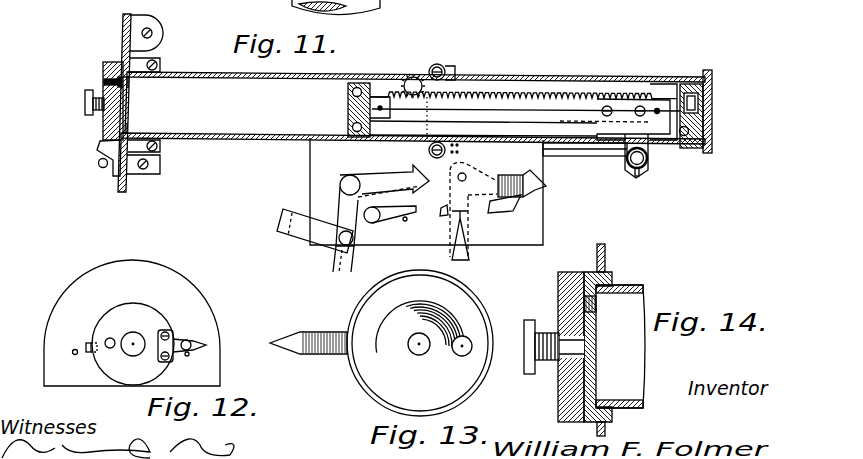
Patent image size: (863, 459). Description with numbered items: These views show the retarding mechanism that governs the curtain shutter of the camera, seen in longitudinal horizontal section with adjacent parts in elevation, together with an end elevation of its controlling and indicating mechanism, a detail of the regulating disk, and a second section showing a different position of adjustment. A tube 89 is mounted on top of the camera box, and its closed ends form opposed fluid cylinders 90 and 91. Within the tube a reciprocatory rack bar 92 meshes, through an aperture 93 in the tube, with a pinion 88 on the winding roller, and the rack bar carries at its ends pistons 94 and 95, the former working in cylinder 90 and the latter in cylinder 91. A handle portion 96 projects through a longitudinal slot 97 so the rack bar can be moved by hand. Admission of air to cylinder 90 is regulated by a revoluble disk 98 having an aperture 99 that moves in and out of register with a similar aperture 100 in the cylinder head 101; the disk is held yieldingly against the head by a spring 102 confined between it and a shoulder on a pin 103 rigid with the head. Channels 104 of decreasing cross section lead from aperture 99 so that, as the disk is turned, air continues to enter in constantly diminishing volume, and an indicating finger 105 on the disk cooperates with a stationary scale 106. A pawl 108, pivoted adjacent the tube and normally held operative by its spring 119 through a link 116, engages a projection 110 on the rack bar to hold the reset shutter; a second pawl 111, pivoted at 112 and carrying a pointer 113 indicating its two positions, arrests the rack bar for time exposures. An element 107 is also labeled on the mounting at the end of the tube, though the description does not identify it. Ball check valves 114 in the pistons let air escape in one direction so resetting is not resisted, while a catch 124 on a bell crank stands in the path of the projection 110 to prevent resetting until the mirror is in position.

In FIG. 11, the pinion 88 is at (408, 78).
In FIG. 11, the tube 89 is at (556, 77).
In FIG. 11, the fluid cylinder 90 is at (196, 105).
In FIG. 11, the fluid cylinder 91 is at (703, 76).
In FIG. 11, the rack bar 92 is at (525, 112).
In FIG. 11, the aperture 93 is at (435, 64).
In FIG. 11, the piston 94 is at (348, 101).
In FIG. 11, the piston 95 is at (696, 103).
In FIG. 11, the handle portion 96 is at (648, 163).
In FIG. 11, the longitudinal slot 97 is at (596, 157).
In FIG. 11, the revoluble disk 98 is at (102, 122).
In FIG. 12, the revoluble disk 98 is at (138, 318).
In FIG. 13, the revoluble disk 98 is at (420, 343).
In FIG. 14, the revoluble disk 98 is at (560, 400).
In FIG. 11, the aperture 99 is at (114, 80).
In FIG. 12, the aperture 99 is at (118, 333).
In FIG. 13, the aperture 99 is at (460, 352).
In FIG. 11, the aperture 100 is at (124, 83).
In FIG. 14, the aperture 100 is at (597, 310).
In FIG. 11, the cylinder head 101 is at (123, 118).
In FIG. 14, the cylinder head 101 is at (597, 382).
In FIG. 11, the spring 102 is at (103, 83).
In FIG. 14, the spring 102 is at (560, 360).
In FIG. 11, the pin 103 is at (85, 102).
In FIG. 12, the pin 103 is at (128, 355).
In FIG. 14, the pin 103 is at (535, 312).
In FIG. 13, the channels 104 is at (431, 306).
In FIG. 12, the indicating finger 105 is at (183, 355).
In FIG. 13, the indicating finger 105 is at (296, 350).
In FIG. 12, the stationary scale 106 is at (132, 323).
In FIG. 11, the mounting ear 107 is at (151, 27).
In FIG. 11, the pawl 108 is at (380, 177).
In FIG. 11, the projection 110 is at (637, 176).
In FIG. 11, the second pawl 111 is at (543, 193).
In FIG. 11, the pivot 112 is at (466, 176).
In FIG. 11, the pointer 113 is at (471, 256).
In FIG. 11, the ball check valves 114 is at (352, 125).
In FIG. 11, the link 116 is at (297, 230).
In FIG. 11, the spring 119 is at (393, 216).
In FIG. 11, the catch 124 is at (607, 160).